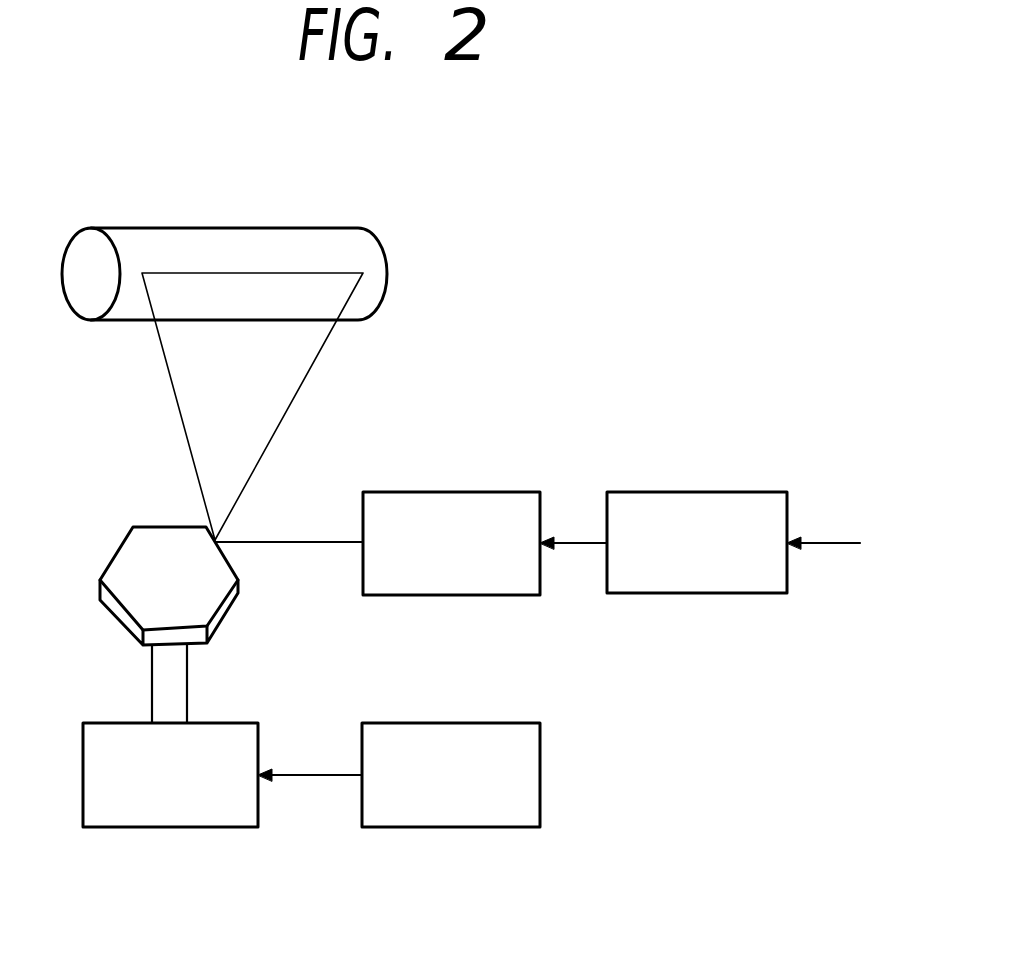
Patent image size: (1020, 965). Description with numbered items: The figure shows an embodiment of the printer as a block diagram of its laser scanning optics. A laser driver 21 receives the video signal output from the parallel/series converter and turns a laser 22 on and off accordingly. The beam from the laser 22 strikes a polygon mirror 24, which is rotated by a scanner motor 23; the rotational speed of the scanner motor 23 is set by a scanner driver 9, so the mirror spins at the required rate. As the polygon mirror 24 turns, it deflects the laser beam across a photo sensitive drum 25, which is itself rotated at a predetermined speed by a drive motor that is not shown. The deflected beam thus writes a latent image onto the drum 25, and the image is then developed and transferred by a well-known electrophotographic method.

The photo sensitive drum 25 is at (350, 228).
The polygon mirror 24 is at (122, 542).
The scanner motor 23 is at (220, 722).
The laser 22 is at (470, 490).
The laser driver 21 is at (717, 490).
The scanner driver 9 is at (503, 722).